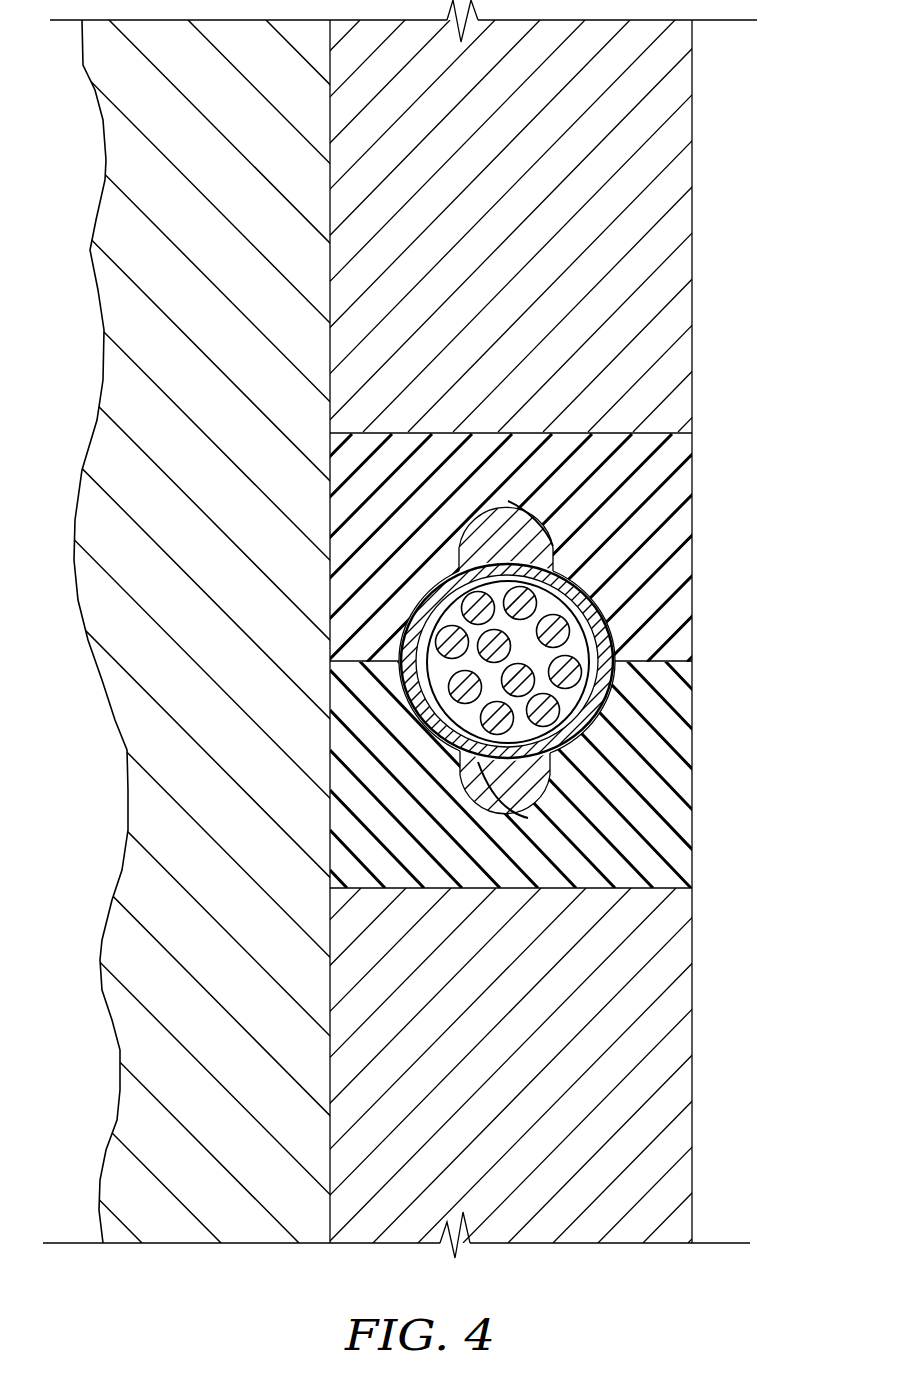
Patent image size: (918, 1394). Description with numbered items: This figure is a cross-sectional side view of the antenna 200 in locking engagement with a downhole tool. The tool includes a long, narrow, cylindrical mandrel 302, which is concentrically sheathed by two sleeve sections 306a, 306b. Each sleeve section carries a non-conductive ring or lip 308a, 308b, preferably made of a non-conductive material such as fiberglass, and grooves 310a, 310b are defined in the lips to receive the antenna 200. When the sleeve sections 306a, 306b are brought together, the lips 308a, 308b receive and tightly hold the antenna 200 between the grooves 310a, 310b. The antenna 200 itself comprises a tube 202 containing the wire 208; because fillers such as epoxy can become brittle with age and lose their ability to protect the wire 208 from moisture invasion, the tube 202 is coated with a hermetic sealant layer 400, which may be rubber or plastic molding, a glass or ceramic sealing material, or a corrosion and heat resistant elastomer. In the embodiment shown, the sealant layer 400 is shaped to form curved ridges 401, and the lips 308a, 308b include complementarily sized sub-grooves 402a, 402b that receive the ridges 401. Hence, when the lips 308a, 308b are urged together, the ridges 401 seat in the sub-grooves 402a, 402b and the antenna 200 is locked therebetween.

The mandrel 302 is at (80, 612).
The sleeve section 306a is at (706, 207).
The sleeve section 306b is at (703, 1085).
The non-conductive ring or lip 308a is at (694, 475).
The non-conductive ring or lip 308b is at (694, 832).
The groove 310a is at (606, 632).
The groove 310b is at (612, 723).
The sub-groove 402a is at (557, 568).
The sub-groove 402b is at (553, 768).
The curved ridge 401 is at (533, 522).
The hermetic sealant layer 400 is at (603, 707).
The tube 202 is at (598, 660).
The antenna 200 is at (605, 628).
The wire 208 is at (568, 672).